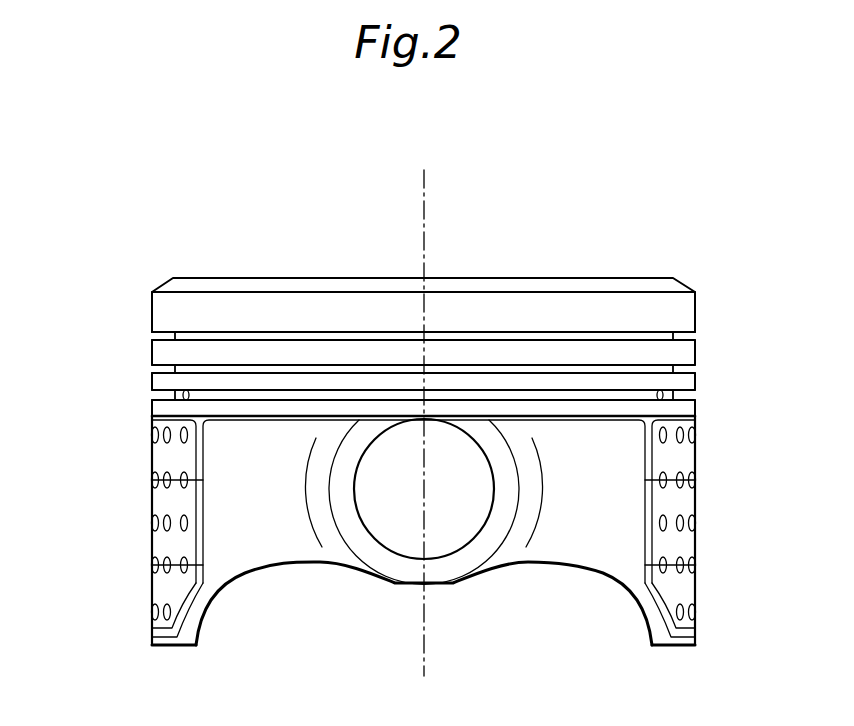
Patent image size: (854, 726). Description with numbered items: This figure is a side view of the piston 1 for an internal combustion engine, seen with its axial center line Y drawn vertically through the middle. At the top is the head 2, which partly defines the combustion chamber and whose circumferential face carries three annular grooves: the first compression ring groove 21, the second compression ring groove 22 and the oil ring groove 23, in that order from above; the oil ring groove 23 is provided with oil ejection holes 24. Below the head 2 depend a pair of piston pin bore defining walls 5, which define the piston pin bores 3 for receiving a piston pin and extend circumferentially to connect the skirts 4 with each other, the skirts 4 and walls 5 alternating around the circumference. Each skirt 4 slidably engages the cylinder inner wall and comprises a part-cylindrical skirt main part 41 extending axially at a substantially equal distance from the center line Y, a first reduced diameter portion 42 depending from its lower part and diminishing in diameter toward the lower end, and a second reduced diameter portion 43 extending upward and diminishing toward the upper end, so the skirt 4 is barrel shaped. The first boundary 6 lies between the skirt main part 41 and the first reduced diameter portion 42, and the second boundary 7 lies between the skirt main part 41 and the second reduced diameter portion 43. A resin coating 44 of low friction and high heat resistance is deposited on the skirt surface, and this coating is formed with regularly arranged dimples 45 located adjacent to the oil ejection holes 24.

The piston 1 is at (615, 222).
The head 2 is at (659, 278).
The first compression ring groove 21 is at (152, 335).
The second compression ring groove 22 is at (152, 370).
The oil ring groove 23 is at (152, 397).
The oil ejection hole 24 is at (190, 398).
The piston pin bore 3 is at (417, 556).
The skirt 4 is at (427, 547).
The skirt main part 41 is at (160, 503).
The first reduced diameter portion 42 is at (160, 598).
The second reduced diameter portion 43 is at (162, 424).
The resin coating 44 is at (672, 588).
The dimple 45 is at (661, 529).
The piston pin bore defining wall 5 is at (304, 556).
The first boundary 6 is at (178, 563).
The second boundary 7 is at (178, 478).
The axial center line Y is at (424, 202).